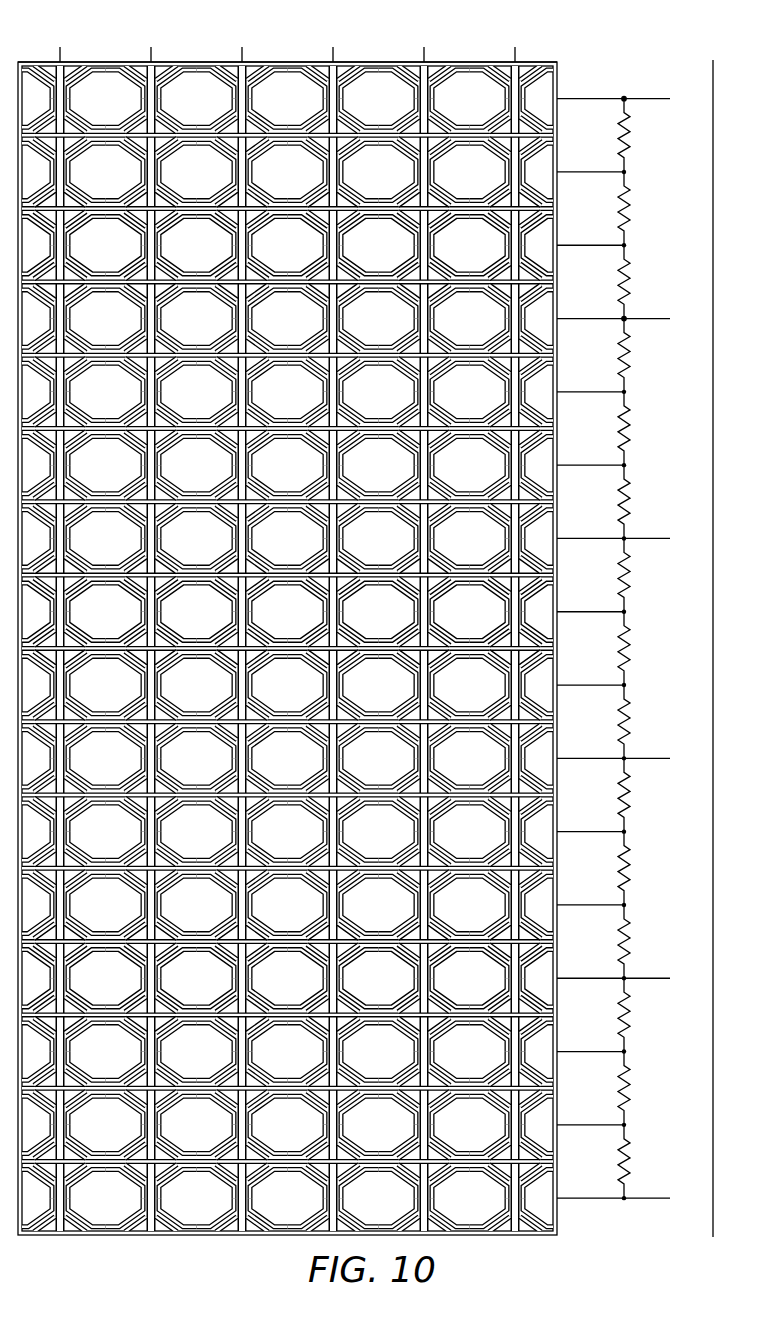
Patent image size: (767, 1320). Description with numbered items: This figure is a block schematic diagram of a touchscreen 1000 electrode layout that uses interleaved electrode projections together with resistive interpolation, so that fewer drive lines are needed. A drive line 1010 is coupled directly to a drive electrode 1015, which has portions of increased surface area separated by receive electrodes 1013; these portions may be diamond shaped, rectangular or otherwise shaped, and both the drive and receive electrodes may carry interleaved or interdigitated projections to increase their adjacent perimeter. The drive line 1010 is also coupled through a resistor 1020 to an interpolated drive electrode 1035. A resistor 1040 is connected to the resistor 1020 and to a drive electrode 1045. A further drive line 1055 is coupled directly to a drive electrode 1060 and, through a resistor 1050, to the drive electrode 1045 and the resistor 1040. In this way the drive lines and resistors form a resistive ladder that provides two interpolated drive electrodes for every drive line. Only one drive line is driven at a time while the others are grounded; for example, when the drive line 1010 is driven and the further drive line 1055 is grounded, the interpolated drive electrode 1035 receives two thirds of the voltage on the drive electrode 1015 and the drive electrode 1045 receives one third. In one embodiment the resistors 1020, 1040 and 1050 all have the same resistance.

The touchscreen 1000 is at (664, 18).
The receive electrodes 1013 is at (520, 62).
The drive electrode 1015 is at (560, 99).
The drive line 1010 is at (646, 104).
The resistor 1020 is at (631, 140).
The interpolated drive electrode 1035 is at (560, 172).
The resistor 1040 is at (631, 212).
The drive electrode 1045 is at (560, 244).
The resistor 1050 is at (631, 285).
The drive electrode 1060 is at (560, 317).
The further drive line 1055 is at (646, 323).